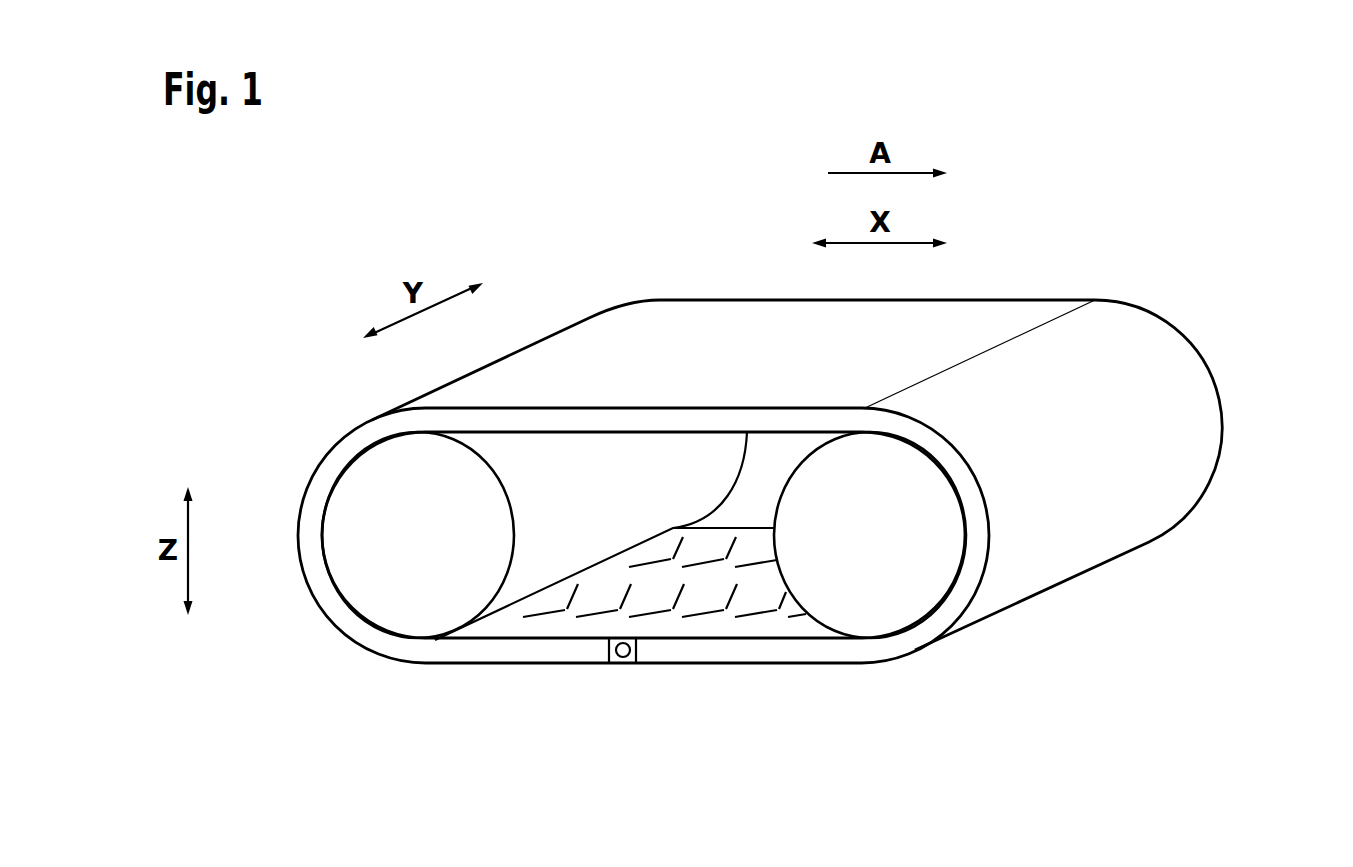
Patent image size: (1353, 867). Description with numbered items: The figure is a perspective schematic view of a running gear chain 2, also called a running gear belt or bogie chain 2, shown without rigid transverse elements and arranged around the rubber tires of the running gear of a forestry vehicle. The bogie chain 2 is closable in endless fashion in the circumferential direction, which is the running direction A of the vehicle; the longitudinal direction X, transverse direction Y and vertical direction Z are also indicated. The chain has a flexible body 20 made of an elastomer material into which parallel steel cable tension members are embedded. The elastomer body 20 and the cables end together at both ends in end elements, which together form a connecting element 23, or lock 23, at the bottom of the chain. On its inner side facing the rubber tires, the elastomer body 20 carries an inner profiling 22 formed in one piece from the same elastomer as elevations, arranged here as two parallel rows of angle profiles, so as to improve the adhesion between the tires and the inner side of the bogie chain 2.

The running gear chain 2 is at (1196, 322).
The flexible body 20 is at (1180, 479).
The inner profiling 22 is at (553, 622).
The connecting element 23 is at (625, 676).